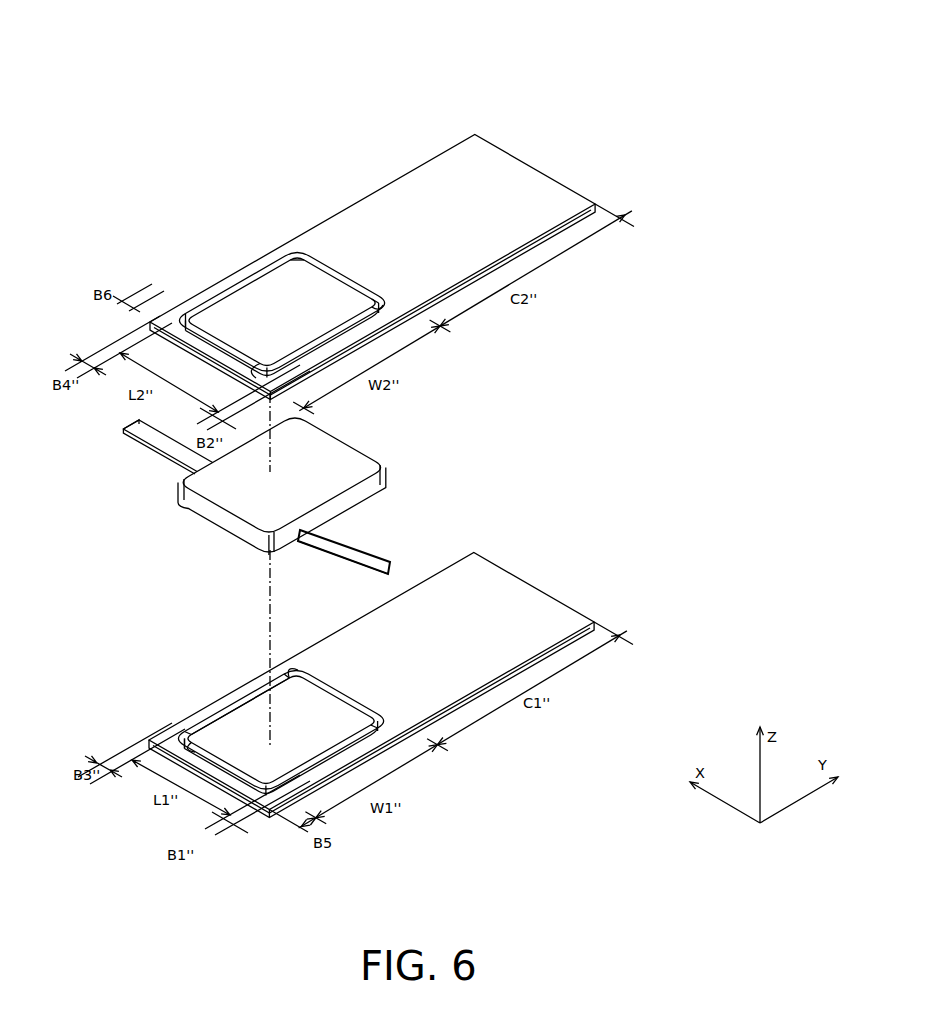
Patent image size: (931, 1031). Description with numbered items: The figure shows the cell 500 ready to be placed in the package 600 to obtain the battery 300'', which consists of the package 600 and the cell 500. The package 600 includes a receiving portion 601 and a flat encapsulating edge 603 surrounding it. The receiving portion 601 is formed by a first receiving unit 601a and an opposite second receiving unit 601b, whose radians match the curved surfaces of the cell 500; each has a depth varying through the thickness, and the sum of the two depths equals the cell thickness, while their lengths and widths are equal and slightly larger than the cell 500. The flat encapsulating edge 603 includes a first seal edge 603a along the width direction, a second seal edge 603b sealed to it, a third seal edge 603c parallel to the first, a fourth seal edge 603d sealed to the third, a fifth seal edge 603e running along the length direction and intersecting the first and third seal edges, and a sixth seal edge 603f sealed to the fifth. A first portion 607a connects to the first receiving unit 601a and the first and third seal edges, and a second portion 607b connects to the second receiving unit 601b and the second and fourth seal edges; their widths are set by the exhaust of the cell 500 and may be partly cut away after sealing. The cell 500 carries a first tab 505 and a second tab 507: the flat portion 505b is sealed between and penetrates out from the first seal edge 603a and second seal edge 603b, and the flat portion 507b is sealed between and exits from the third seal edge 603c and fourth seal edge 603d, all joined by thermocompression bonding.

The battery 300'' is at (368, 19).
The cell 500 is at (365, 448).
The first tab 505 is at (369, 538).
The flat portion 505b is at (357, 557).
The second tab 507 is at (153, 456).
The flat portion 507b is at (130, 428).
The package 600 is at (351, 663).
The receiving portion 601 is at (218, 752).
The first receiving unit 601a is at (332, 710).
The second receiving unit 601b is at (230, 298).
The flat encapsulating edge 603 is at (182, 710).
The first seal edge 603a is at (347, 770).
The second seal edge 603b is at (345, 343).
The third seal edge 603c is at (220, 703).
The fourth seal edge 603d is at (252, 268).
The fifth seal edge 603e is at (193, 763).
The sixth seal edge 603f is at (180, 340).
The first portion 607a is at (480, 577).
The second portion 607b is at (508, 203).